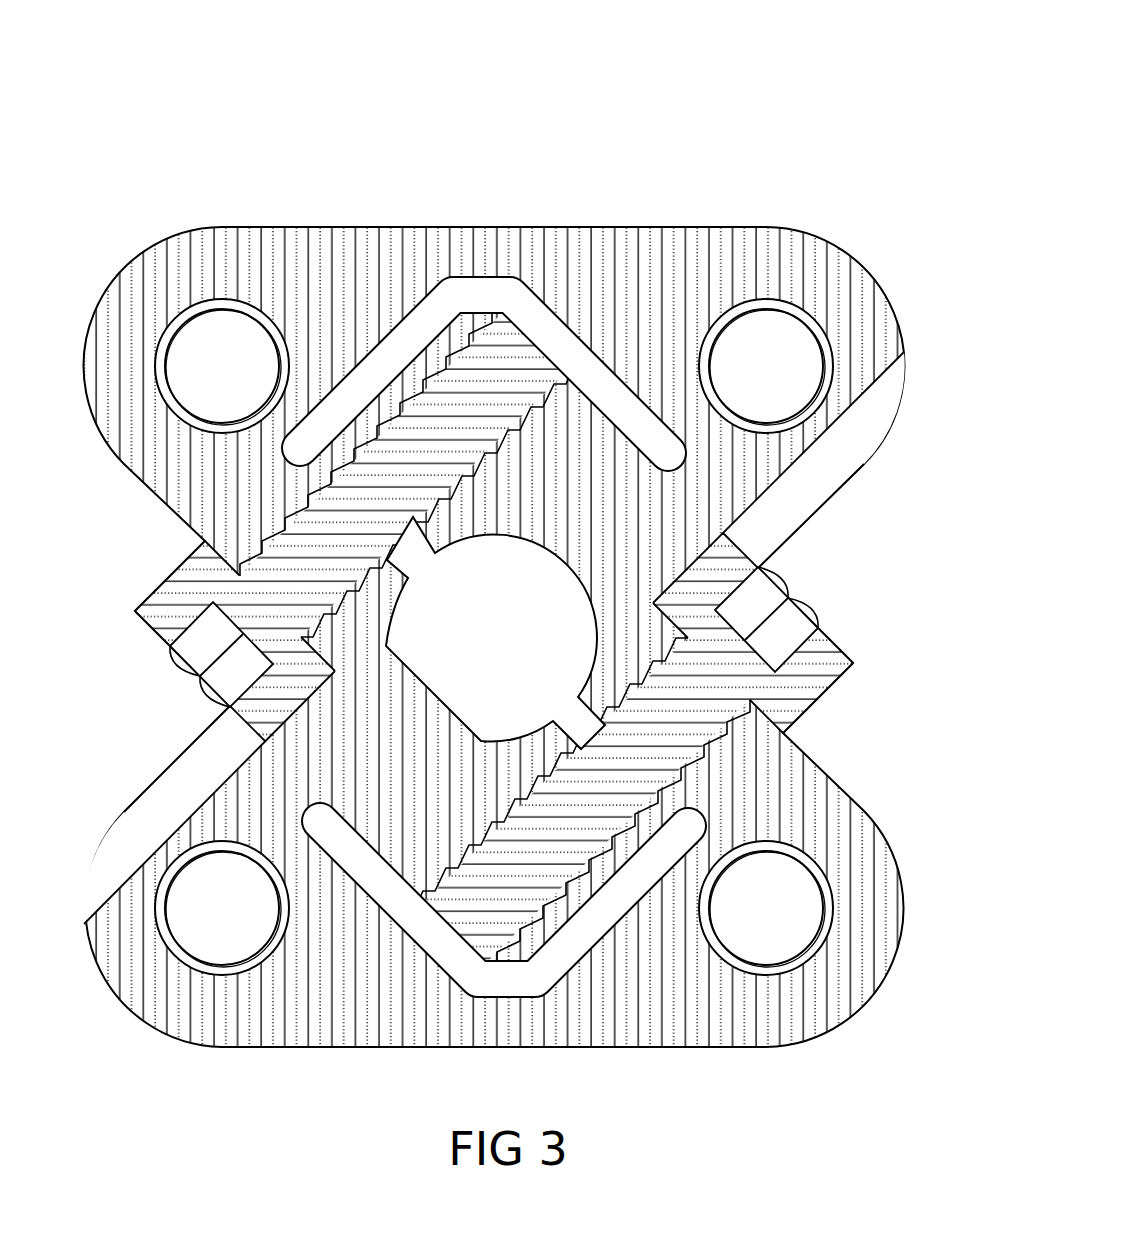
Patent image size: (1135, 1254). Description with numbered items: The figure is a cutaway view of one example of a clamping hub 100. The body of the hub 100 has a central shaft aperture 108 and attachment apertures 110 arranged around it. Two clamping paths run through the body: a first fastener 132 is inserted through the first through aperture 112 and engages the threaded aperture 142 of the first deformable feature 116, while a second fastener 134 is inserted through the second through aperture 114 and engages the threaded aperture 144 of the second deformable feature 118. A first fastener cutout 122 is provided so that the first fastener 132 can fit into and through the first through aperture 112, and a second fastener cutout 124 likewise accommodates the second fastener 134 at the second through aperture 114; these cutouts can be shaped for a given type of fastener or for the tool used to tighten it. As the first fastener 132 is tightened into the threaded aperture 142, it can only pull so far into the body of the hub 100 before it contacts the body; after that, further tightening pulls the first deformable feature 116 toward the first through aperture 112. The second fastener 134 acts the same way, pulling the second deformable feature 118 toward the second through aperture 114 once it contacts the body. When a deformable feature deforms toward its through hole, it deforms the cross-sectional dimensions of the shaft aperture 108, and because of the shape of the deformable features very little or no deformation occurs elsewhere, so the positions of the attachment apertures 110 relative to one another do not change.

The hub 100 is at (819, 130).
The shaft aperture 108 is at (481, 647).
The attachment apertures 110 is at (207, 375).
The first through aperture 112 is at (705, 748).
The second through aperture 114 is at (253, 532).
The first deformable feature 116 is at (547, 940).
The second deformable feature 118 is at (437, 328).
The first fastener cutout 122 is at (805, 480).
The second fastener cutout 124 is at (160, 808).
The first fastener 132 is at (820, 658).
The second fastener 134 is at (163, 623).
The threaded aperture 142 is at (600, 925).
The threaded aperture 144 is at (463, 328).